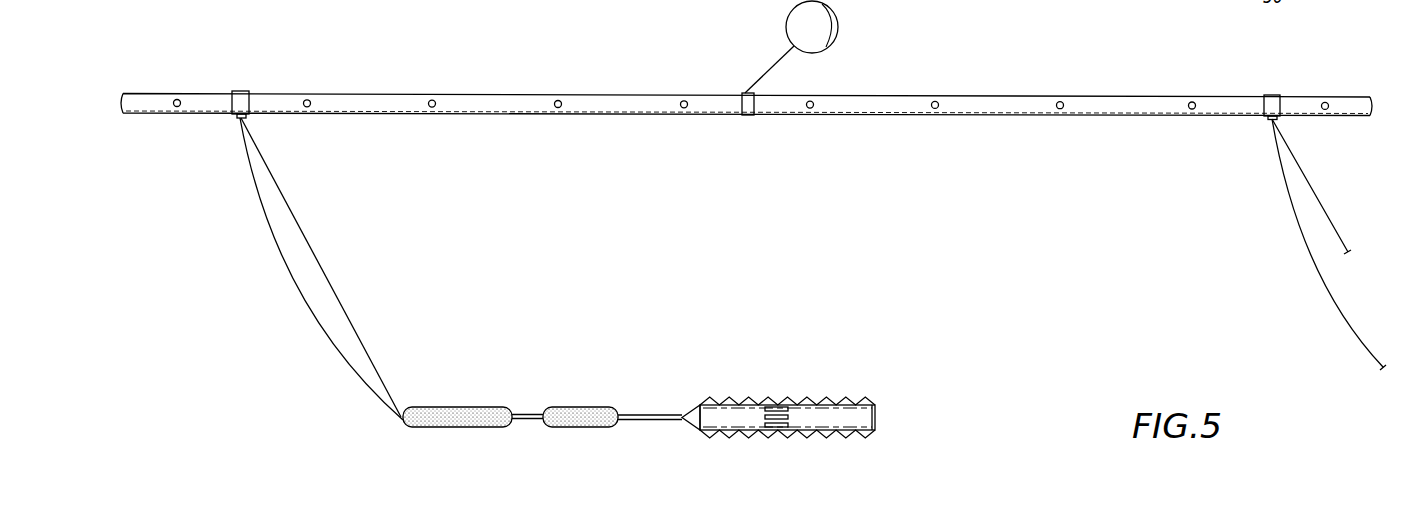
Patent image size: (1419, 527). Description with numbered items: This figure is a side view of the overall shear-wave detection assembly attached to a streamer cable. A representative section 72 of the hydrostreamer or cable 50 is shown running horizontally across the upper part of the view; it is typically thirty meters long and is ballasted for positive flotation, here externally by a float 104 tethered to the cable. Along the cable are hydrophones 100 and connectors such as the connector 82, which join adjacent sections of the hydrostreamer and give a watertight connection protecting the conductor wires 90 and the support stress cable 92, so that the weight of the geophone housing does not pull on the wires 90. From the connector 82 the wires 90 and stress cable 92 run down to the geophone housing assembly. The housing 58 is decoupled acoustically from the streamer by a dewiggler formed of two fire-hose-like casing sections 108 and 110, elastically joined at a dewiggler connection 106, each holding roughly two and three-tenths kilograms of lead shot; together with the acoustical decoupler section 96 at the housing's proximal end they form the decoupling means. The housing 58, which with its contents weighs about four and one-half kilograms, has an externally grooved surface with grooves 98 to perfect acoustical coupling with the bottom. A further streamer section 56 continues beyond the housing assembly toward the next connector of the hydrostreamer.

The hydrostreamer cable 50 is at (530, 58).
The streamer section 56 is at (1105, 8).
The geophone housing 58 is at (841, 378).
The hydrostreamer section 72 is at (477, 105).
The connector 82 is at (238, 90).
The conductor wires 90 is at (295, 290).
The support stress cable 92 is at (342, 302).
The acoustical decoupler section 96 is at (452, 435).
The grooves 98 is at (987, 5).
The hydrophones 100 is at (310, 99).
The float 104 is at (839, 42).
The dewiggler connection 106 is at (530, 404).
The dewiggler casing section 108 is at (462, 407).
The dewiggler casing section 110 is at (595, 408).